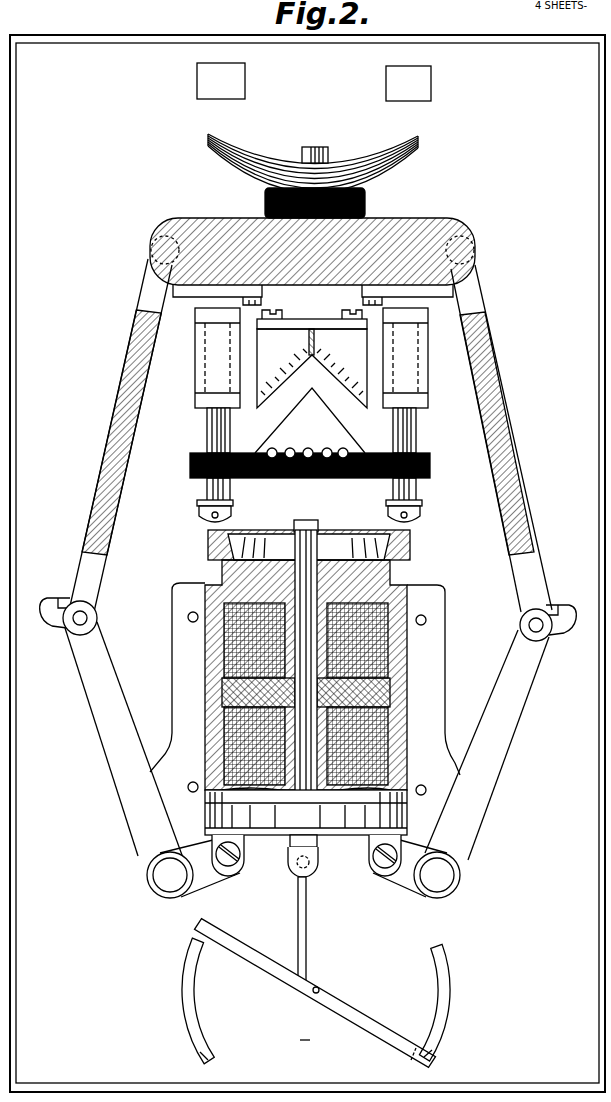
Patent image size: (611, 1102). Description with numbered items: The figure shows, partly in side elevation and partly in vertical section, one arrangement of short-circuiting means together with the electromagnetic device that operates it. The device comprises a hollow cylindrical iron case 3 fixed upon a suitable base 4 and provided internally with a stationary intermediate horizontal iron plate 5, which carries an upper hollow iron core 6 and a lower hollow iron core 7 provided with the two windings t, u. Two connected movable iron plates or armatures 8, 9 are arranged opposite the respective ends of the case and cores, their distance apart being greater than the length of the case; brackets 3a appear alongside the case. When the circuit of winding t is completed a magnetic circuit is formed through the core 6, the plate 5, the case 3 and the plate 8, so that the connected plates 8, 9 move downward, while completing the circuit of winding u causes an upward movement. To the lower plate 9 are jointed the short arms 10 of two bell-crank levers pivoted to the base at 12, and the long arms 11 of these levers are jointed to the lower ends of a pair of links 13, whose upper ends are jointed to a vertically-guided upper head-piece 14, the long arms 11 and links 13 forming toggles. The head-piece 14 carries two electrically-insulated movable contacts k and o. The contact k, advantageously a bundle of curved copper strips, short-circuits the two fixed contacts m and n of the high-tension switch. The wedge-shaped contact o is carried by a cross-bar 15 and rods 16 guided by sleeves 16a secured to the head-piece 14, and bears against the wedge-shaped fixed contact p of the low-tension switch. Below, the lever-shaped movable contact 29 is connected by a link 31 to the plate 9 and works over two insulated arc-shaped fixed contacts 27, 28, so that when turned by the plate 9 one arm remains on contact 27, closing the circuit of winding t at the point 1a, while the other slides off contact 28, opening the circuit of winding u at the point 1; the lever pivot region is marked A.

The fixed contact m is at (221, 81).
The fixed contact n is at (408, 83).
The movable contact k is at (398, 175).
The upper head-piece 14 is at (205, 230).
The base 4 is at (307, 563).
The links 13 is at (126, 408).
The sleeves 16a is at (195, 366).
The rods 16 is at (207, 427).
The fixed contact p is at (312, 359).
The movable contact o is at (310, 420).
The cross-bar 15 is at (356, 478).
The movable iron plate 8 is at (265, 532).
The hollow cylindrical iron case 3 is at (398, 698).
The brackets 3a is at (400, 578).
The intermediate horizontal iron plate 5 is at (240, 690).
The upper hollow iron core 6 is at (320, 590).
The winding t is at (233, 635).
The winding u is at (377, 773).
The lower hollow iron core 7 is at (297, 788).
The long arms 11 is at (113, 757).
The pivot 12 is at (157, 884).
The short arms 10 is at (205, 879).
The movable iron plate 9 is at (346, 838).
The link 31 is at (306, 927).
The movable contact 29 is at (350, 1008).
The arc-shaped fixed contact 28 is at (186, 984).
The arc-shaped fixed contact 27 is at (443, 990).
The point 1 is at (189, 1055).
The point 1a is at (446, 1053).
The lever pivot region A is at (306, 1053).